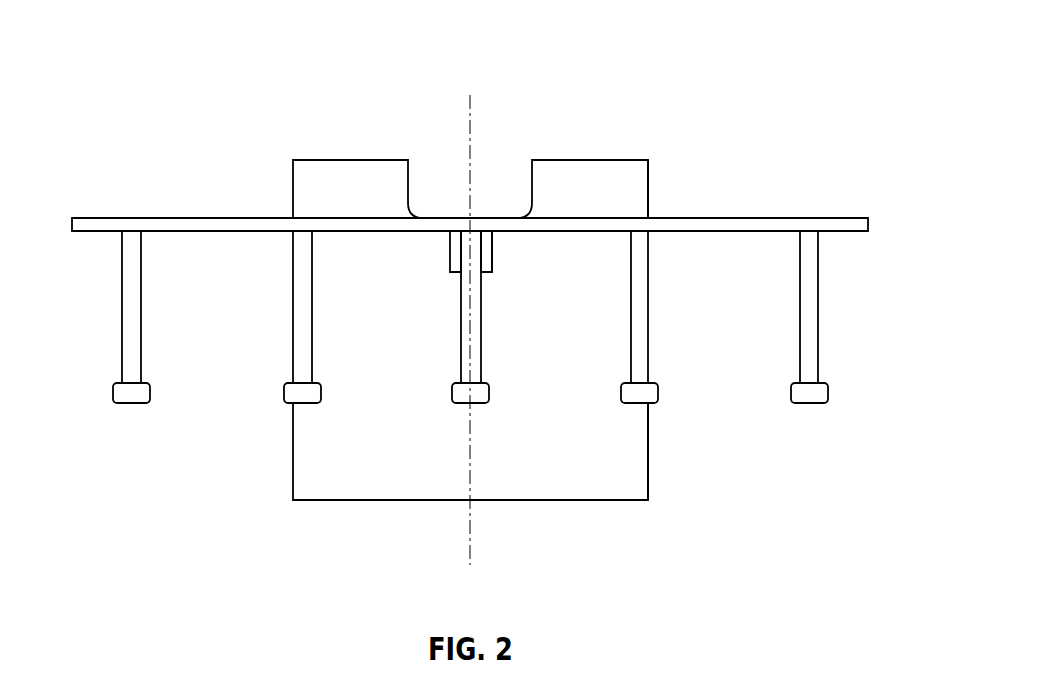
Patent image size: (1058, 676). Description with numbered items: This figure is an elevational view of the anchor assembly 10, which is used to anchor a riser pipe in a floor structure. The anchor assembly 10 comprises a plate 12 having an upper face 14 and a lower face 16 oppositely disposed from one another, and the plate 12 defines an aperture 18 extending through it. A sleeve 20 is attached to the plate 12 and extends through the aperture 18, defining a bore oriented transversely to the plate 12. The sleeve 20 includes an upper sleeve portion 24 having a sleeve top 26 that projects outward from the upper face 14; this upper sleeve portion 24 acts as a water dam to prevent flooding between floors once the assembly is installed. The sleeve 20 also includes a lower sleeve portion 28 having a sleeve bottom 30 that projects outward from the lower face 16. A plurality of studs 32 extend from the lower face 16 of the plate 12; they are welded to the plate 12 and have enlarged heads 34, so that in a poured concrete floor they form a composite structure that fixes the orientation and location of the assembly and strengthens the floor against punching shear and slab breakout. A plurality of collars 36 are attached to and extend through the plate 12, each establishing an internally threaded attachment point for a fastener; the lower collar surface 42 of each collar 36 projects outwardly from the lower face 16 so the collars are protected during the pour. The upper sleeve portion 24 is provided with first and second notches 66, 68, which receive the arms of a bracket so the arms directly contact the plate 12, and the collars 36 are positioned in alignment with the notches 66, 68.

The anchor assembly 10 is at (832, 50).
The plate 12 is at (860, 225).
The upper face 14 is at (83, 217).
The lower face 16 is at (92, 233).
The aperture 18 is at (662, 217).
The sleeve 20 is at (618, 487).
The upper sleeve portion 24 is at (322, 172).
The sleeve top 26 is at (605, 158).
The lower sleeve portion 28 is at (637, 429).
The sleeve bottom 30 is at (505, 502).
The studs 32 is at (820, 362).
The enlarged heads 34 is at (813, 393).
The collars 36 is at (493, 252).
The lower collar surface 42 is at (455, 273).
The first notch 66 is at (512, 141).
The second notch 68 is at (504, 170).